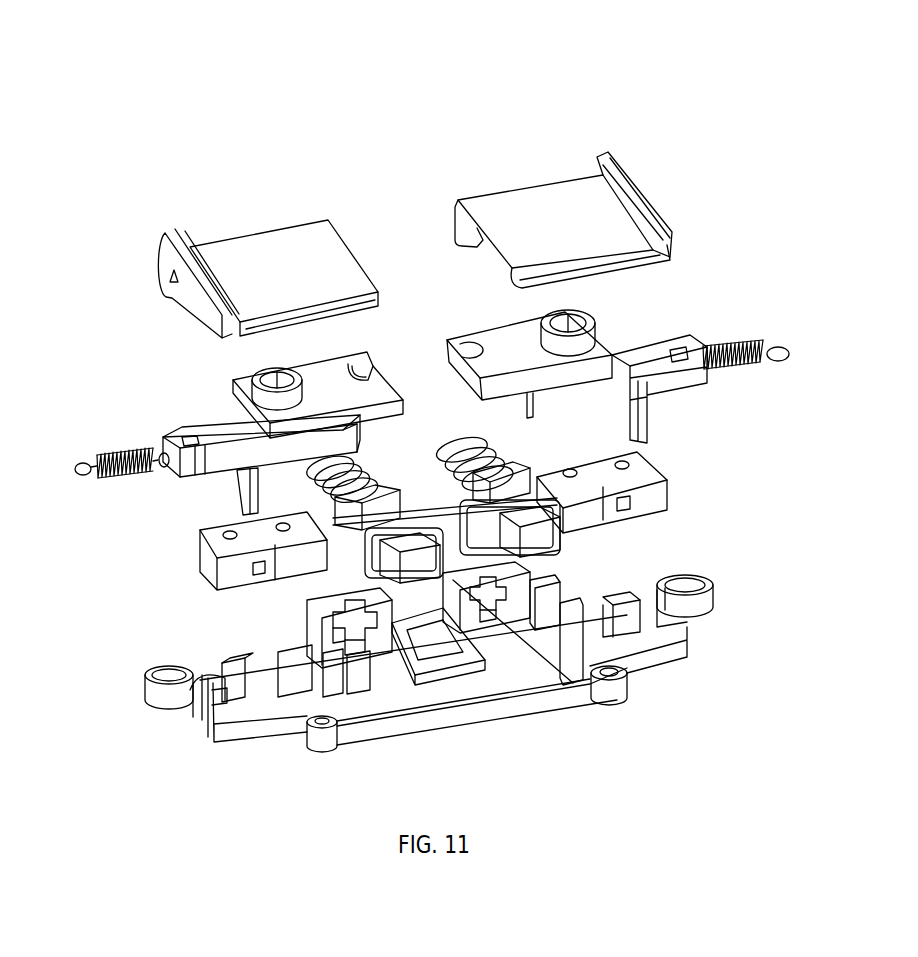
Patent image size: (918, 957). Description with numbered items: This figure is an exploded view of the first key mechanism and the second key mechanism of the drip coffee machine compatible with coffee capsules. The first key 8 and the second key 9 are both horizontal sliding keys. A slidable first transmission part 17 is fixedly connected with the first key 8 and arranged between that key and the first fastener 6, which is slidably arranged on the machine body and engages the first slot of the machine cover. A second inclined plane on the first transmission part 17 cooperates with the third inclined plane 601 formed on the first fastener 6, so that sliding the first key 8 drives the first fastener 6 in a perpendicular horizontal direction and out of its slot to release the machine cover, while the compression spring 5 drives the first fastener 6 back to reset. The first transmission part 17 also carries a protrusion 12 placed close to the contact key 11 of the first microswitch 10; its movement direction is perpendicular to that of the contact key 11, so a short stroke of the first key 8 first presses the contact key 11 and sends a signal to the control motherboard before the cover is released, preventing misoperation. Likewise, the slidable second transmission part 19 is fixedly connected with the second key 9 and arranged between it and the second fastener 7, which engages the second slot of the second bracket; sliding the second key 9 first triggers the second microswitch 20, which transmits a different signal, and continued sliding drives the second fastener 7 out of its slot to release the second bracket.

The first key 8 is at (288, 265).
The second key 9 is at (540, 208).
The first transmission part 17 is at (330, 358).
The second transmission part 19 is at (500, 342).
The protrusion 12 is at (227, 480).
The compression spring 5 is at (373, 523).
The first microswitch 10 is at (240, 550).
The contact key 11 is at (252, 580).
The second microswitch 20 is at (610, 480).
The first fastener 6 is at (413, 570).
The third inclined plane 601 is at (612, 682).
The second fastener 7 is at (688, 622).